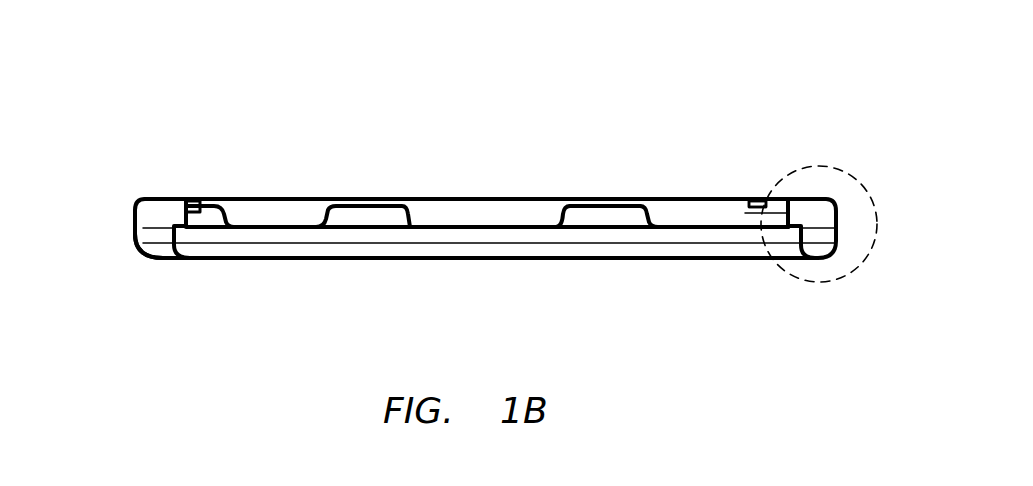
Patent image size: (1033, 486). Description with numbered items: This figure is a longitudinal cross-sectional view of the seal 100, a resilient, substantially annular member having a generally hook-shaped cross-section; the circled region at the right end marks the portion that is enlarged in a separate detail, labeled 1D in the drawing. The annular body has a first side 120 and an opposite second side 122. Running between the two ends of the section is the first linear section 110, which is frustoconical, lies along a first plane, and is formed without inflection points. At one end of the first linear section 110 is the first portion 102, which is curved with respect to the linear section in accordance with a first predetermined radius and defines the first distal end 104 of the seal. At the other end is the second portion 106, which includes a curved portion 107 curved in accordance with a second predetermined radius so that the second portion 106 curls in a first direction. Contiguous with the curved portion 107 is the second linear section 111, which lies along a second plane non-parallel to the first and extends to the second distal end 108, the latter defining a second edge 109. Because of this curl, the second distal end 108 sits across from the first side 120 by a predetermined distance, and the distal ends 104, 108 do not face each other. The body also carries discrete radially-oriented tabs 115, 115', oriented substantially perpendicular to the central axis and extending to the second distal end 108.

The seal 100 is at (760, 60).
The first portion 102 is at (132, 214).
The first distal end 104 is at (158, 197).
The second portion 106 is at (157, 260).
The curved portion 107 is at (159, 262).
The second distal end 108 is at (193, 197).
The second edge 109 is at (797, 203).
The first linear section 110 is at (380, 198).
The second linear section 111 is at (757, 211).
The radially-oriented tab 115 is at (723, 211).
The radially-oriented tab 115' is at (271, 268).
The first side 120 is at (146, 222).
The second side 122 is at (592, 220).
The detail view circle 1D is at (853, 175).